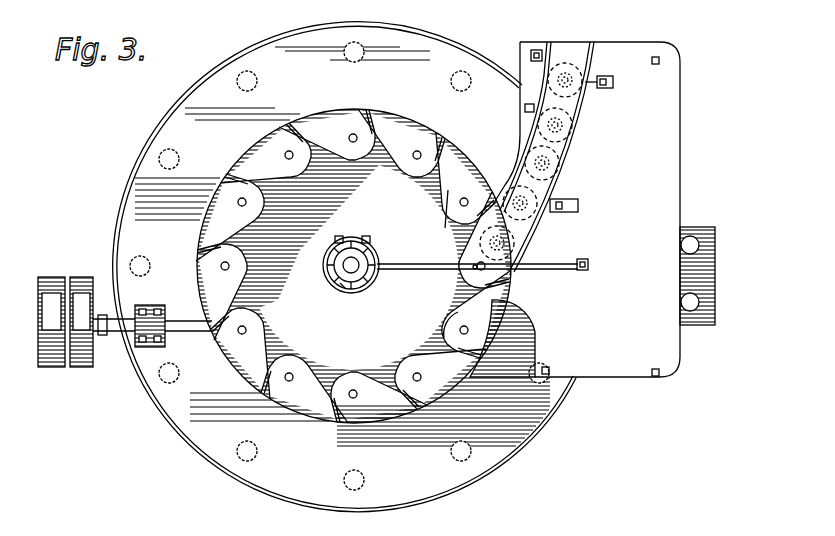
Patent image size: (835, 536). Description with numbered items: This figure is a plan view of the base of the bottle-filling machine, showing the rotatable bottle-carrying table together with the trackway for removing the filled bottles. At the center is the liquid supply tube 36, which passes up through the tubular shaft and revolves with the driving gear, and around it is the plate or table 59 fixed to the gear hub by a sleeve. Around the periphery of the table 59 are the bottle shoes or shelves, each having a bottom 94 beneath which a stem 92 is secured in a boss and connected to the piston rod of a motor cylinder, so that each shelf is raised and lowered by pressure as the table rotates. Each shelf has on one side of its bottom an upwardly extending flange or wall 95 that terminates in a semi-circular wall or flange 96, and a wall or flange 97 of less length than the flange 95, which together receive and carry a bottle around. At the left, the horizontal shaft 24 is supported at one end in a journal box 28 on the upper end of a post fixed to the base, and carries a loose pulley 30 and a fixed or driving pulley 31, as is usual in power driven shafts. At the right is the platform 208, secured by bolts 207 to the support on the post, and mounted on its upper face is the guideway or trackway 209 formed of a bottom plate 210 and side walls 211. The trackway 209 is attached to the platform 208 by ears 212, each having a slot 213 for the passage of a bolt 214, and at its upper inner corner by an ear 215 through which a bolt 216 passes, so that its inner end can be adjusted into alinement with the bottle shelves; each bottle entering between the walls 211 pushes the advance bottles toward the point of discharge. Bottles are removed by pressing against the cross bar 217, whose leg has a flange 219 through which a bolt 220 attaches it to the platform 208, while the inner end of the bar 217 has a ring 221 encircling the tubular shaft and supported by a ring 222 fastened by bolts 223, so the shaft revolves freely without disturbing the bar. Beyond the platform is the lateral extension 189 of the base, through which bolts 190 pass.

The horizontal shaft 24 is at (344, 267).
The journal box 28 is at (150, 306).
The loose pulley 30 is at (52, 277).
The fixed or driving pulley 31 is at (82, 277).
The liquid supply tube 36 is at (354, 279).
The plate or table 59 is at (353, 266).
The stem 92 is at (446, 218).
The bottom of shoe or shelf 94 is at (473, 245).
The flange or wall 95 is at (452, 224).
The semi-circular wall or flange 96 is at (443, 335).
The wall or flange 97 is at (366, 118).
The lateral extension 189 is at (714, 285).
The bolts 190 is at (696, 238).
The bolts 207 is at (660, 60).
The platform 208 is at (575, 209).
The guideway or trackway 209 is at (552, 127).
The bottom plate 210 is at (570, 158).
The side walls 211 is at (586, 128).
The ears 212 is at (611, 90).
The slot 213 is at (613, 82).
The bolt 214 is at (604, 77).
The ear 215 is at (529, 54).
The bolt 216 is at (536, 49).
The cross bar 217 is at (558, 272).
The flange 219 is at (589, 266).
The bolt 220 is at (586, 262).
The ring 221 is at (337, 281).
The ring 222 is at (333, 263).
The bolts 223 is at (383, 234).